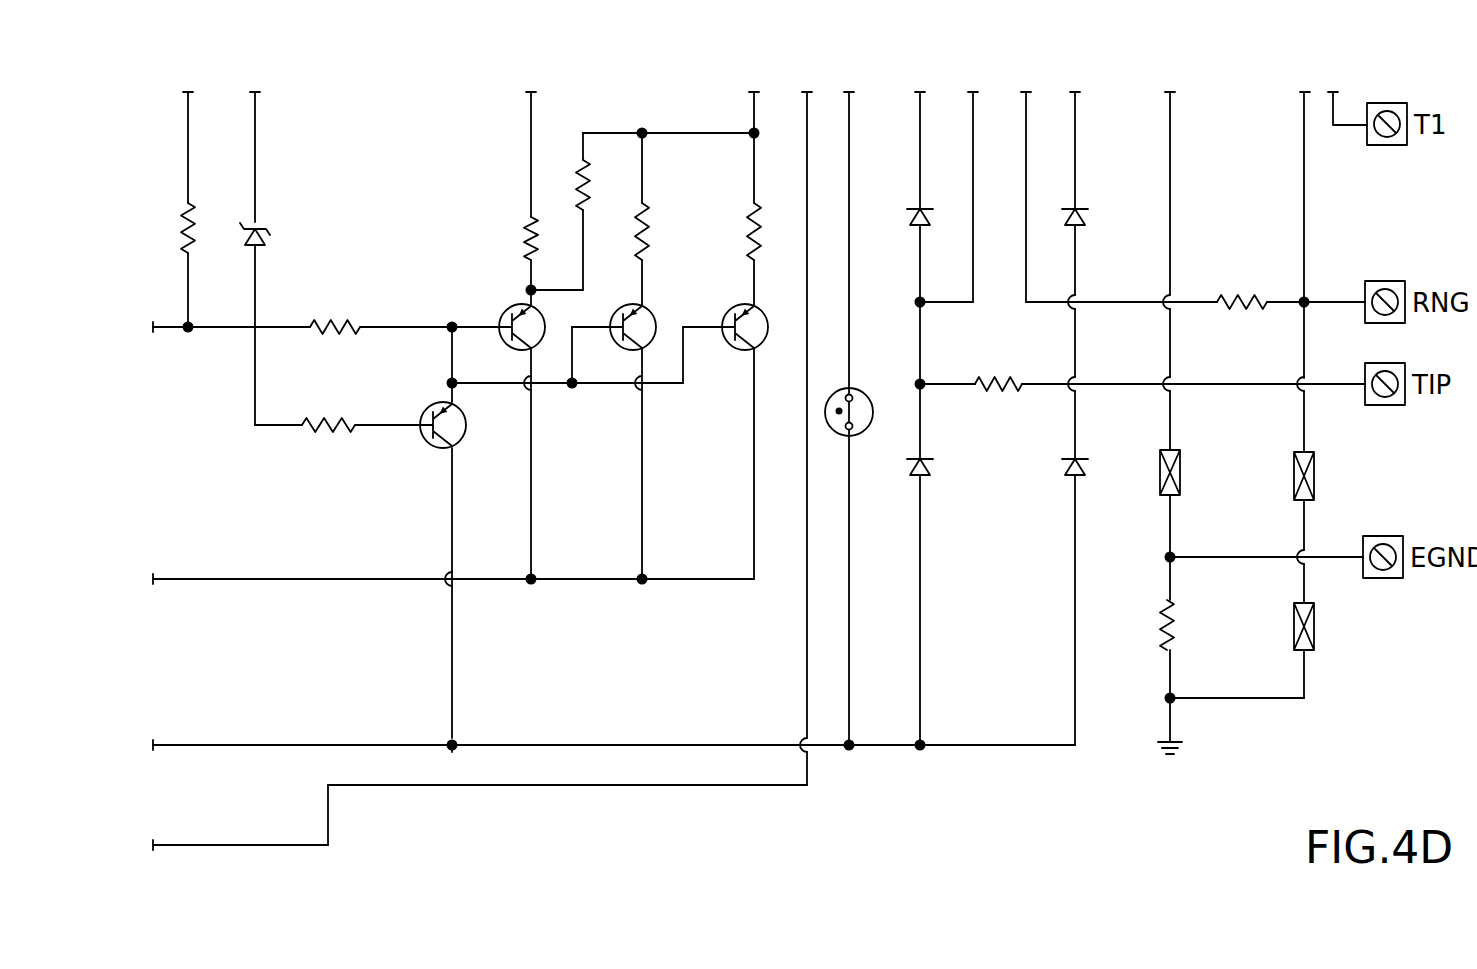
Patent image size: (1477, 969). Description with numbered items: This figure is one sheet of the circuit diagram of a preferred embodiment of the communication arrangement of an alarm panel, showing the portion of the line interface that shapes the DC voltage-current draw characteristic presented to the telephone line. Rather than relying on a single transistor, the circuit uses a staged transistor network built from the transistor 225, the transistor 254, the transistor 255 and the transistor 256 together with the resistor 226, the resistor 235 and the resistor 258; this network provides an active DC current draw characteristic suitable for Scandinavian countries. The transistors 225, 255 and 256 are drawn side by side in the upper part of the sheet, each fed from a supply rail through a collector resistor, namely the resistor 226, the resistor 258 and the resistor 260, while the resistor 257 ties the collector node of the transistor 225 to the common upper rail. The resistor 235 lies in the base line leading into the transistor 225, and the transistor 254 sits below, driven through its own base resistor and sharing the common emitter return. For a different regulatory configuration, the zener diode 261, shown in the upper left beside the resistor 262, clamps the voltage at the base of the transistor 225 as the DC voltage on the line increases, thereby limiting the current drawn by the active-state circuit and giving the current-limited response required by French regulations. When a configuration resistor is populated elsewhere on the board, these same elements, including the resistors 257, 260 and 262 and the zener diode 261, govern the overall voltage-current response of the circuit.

The resistor 262 is at (191, 222).
The zener diode 261 is at (268, 238).
The resistor 226 is at (523, 233).
The transistor 225 is at (515, 302).
The resistor 257 is at (580, 162).
The resistor 258 is at (653, 245).
The resistor 260 is at (757, 208).
The transistor 255 is at (618, 308).
The transistor 256 is at (720, 313).
The transistor 254 is at (475, 430).
The resistor 235 is at (312, 333).